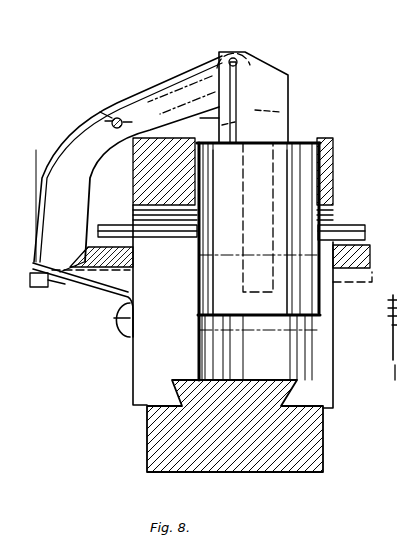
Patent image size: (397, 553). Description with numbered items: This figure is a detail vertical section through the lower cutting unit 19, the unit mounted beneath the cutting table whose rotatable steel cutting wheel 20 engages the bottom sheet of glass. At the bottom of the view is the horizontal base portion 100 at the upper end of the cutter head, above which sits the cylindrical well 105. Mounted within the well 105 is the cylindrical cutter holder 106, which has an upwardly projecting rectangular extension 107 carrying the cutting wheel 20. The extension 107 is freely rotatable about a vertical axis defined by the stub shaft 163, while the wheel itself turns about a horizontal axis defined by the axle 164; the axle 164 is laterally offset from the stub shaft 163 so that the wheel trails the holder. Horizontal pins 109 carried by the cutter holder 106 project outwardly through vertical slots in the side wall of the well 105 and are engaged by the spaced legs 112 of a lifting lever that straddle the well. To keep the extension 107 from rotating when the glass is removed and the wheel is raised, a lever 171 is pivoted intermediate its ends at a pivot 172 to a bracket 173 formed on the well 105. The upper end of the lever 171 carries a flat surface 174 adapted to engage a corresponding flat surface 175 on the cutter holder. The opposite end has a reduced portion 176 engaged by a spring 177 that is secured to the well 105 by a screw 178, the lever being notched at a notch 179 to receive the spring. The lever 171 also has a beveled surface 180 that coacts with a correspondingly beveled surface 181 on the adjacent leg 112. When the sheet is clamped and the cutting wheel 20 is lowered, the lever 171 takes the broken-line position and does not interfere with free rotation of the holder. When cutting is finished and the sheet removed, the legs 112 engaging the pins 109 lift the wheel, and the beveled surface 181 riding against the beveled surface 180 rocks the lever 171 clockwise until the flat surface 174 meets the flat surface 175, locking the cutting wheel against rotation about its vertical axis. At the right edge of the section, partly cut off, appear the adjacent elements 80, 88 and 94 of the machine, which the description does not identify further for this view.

The lower cutting unit 19 is at (340, 179).
The cutting wheel 20 is at (232, 46).
The connector 80 is at (392, 329).
The lead 88 is at (388, 373).
The terminal 94 is at (390, 301).
The base portion 100 is at (240, 468).
The cylindrical well 105 is at (334, 140).
The cutter holder 106 is at (215, 272).
The rectangular extension 107 is at (283, 118).
The horizontal pins 109 is at (116, 232).
The spaced legs 112 is at (366, 254).
The stub shaft 163 is at (242, 222).
The axle 164 is at (240, 62).
The lever 171 is at (56, 152).
The pivot 172 is at (116, 116).
The bracket 173 is at (100, 112).
The flat surface 174 is at (196, 76).
The flat surface 175 is at (218, 125).
The reduced portion 176 is at (40, 292).
The spring 177 is at (72, 290).
The screw 178 is at (120, 333).
The notch 179 is at (52, 160).
The beveled surface 180 is at (66, 252).
The beveled surface 181 is at (90, 222).